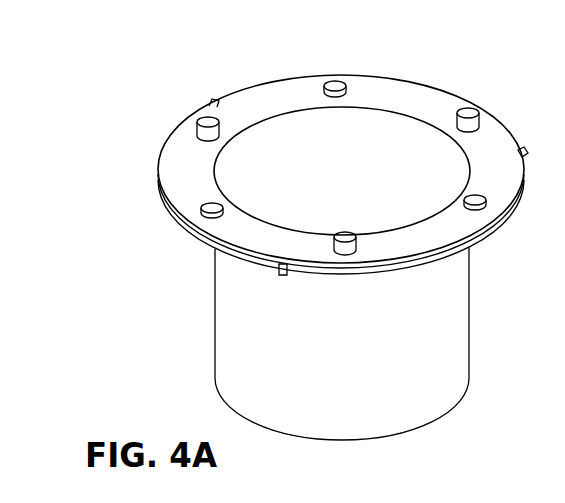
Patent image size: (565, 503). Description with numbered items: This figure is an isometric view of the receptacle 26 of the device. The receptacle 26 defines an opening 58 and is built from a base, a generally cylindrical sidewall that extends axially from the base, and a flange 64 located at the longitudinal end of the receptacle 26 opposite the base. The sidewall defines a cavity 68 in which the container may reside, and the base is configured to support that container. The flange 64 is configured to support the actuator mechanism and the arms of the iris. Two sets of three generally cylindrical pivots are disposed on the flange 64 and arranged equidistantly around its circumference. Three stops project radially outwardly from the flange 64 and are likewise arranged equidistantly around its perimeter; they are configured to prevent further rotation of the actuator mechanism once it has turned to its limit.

The receptacle 26 is at (156, 77).
The opening 58 is at (388, 162).
The flange 64 is at (158, 172).
The cavity 68 is at (300, 205).